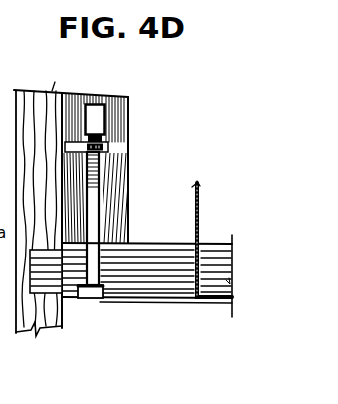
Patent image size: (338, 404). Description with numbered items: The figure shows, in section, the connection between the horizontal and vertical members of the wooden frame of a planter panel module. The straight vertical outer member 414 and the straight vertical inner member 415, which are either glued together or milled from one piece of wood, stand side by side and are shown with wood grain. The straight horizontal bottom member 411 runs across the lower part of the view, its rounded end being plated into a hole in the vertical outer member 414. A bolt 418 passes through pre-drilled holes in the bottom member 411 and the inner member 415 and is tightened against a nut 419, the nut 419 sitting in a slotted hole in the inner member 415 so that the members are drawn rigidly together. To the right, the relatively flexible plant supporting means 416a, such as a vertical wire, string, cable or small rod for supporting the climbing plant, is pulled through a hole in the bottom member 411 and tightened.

The straight horizontal bottom member 411 is at (210, 249).
The straight vertical outer member 414 is at (50, 325).
The straight vertical inner member 415 is at (128, 117).
The relatively flexible plant supporting means 416a is at (199, 193).
The bolt 418 is at (90, 294).
The nut 419 is at (108, 149).